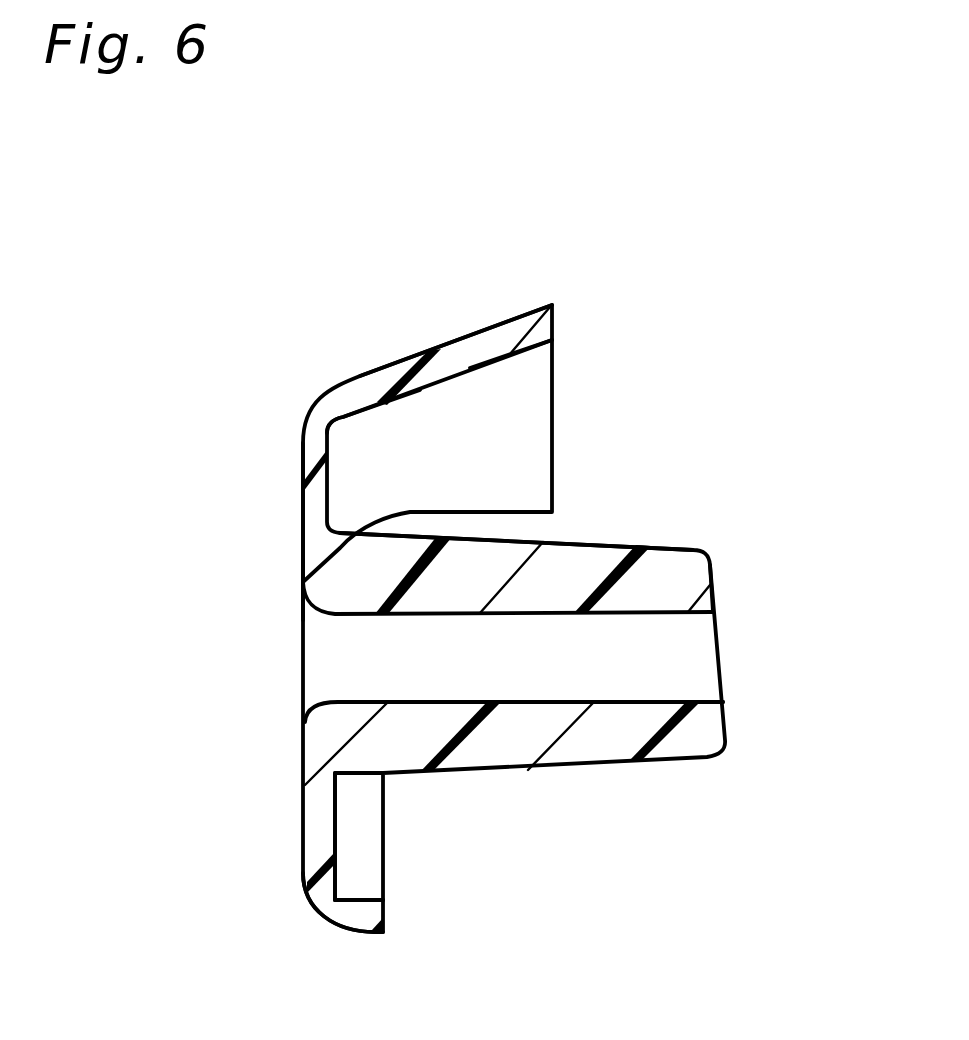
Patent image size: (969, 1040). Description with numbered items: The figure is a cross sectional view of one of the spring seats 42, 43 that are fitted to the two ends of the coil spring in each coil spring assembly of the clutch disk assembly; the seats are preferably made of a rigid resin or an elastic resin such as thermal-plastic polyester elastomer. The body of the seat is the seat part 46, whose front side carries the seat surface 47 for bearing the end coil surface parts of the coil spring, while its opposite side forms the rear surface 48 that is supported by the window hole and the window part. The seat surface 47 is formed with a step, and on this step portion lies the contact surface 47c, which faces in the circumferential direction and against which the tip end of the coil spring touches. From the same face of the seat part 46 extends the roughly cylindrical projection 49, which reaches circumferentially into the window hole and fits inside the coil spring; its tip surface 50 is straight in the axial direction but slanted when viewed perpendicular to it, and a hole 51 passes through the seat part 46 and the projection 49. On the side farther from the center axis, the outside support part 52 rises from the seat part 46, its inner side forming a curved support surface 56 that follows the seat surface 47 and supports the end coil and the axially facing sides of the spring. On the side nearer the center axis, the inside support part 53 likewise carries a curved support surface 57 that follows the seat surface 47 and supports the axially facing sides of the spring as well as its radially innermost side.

The spring seat 42 is at (585, 618).
The spring seat 43 is at (682, 387).
The seat part 46 is at (315, 505).
The seat surface 47 is at (330, 477).
The contact surface 47c is at (358, 820).
The rear surface 48 is at (303, 582).
The projection 49 is at (657, 547).
The tip surface 50 is at (727, 730).
The hole 51 is at (647, 614).
The outside support part 52 is at (570, 322).
The inside support part 53 is at (368, 940).
The support surface 56 is at (470, 368).
The support surface 57 is at (367, 897).